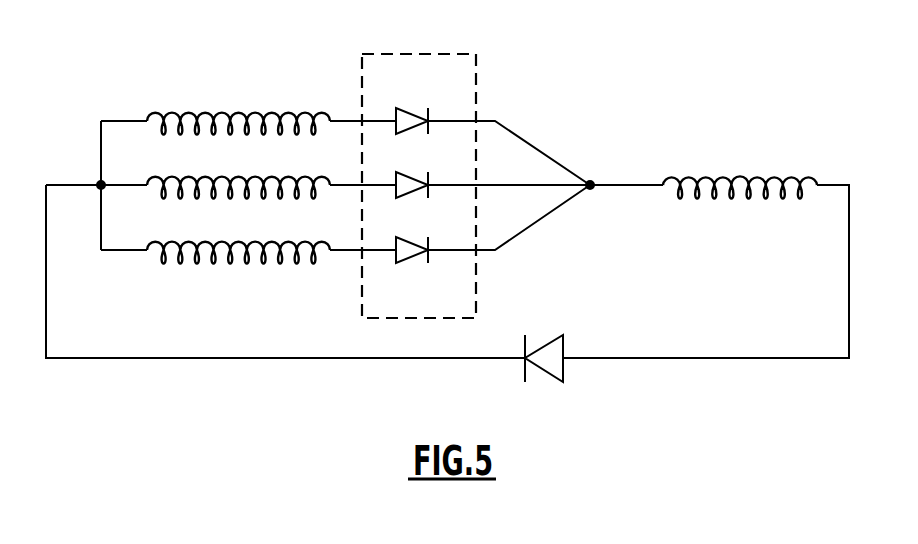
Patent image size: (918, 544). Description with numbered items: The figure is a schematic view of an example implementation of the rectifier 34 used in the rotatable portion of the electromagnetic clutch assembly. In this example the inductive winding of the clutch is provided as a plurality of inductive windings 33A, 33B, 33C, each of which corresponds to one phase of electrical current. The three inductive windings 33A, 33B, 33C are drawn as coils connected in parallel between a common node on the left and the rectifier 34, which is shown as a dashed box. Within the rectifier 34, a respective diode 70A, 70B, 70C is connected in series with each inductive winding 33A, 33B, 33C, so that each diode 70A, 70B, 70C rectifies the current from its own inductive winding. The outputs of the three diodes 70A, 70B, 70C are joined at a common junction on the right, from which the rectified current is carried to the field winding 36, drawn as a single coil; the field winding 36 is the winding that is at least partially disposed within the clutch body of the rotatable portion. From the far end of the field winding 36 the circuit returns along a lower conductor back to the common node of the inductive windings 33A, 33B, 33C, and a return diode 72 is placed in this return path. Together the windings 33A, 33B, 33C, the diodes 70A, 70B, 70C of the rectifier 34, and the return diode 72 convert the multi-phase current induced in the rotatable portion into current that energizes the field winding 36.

The inductive winding 33A is at (237, 108).
The inductive winding 33B is at (237, 172).
The inductive winding 33C is at (237, 237).
The rectifier 34 is at (442, 54).
The diode 70A is at (404, 105).
The diode 70B is at (404, 170).
The diode 70C is at (408, 263).
The field winding 36 is at (740, 176).
The return diode 72 is at (565, 370).